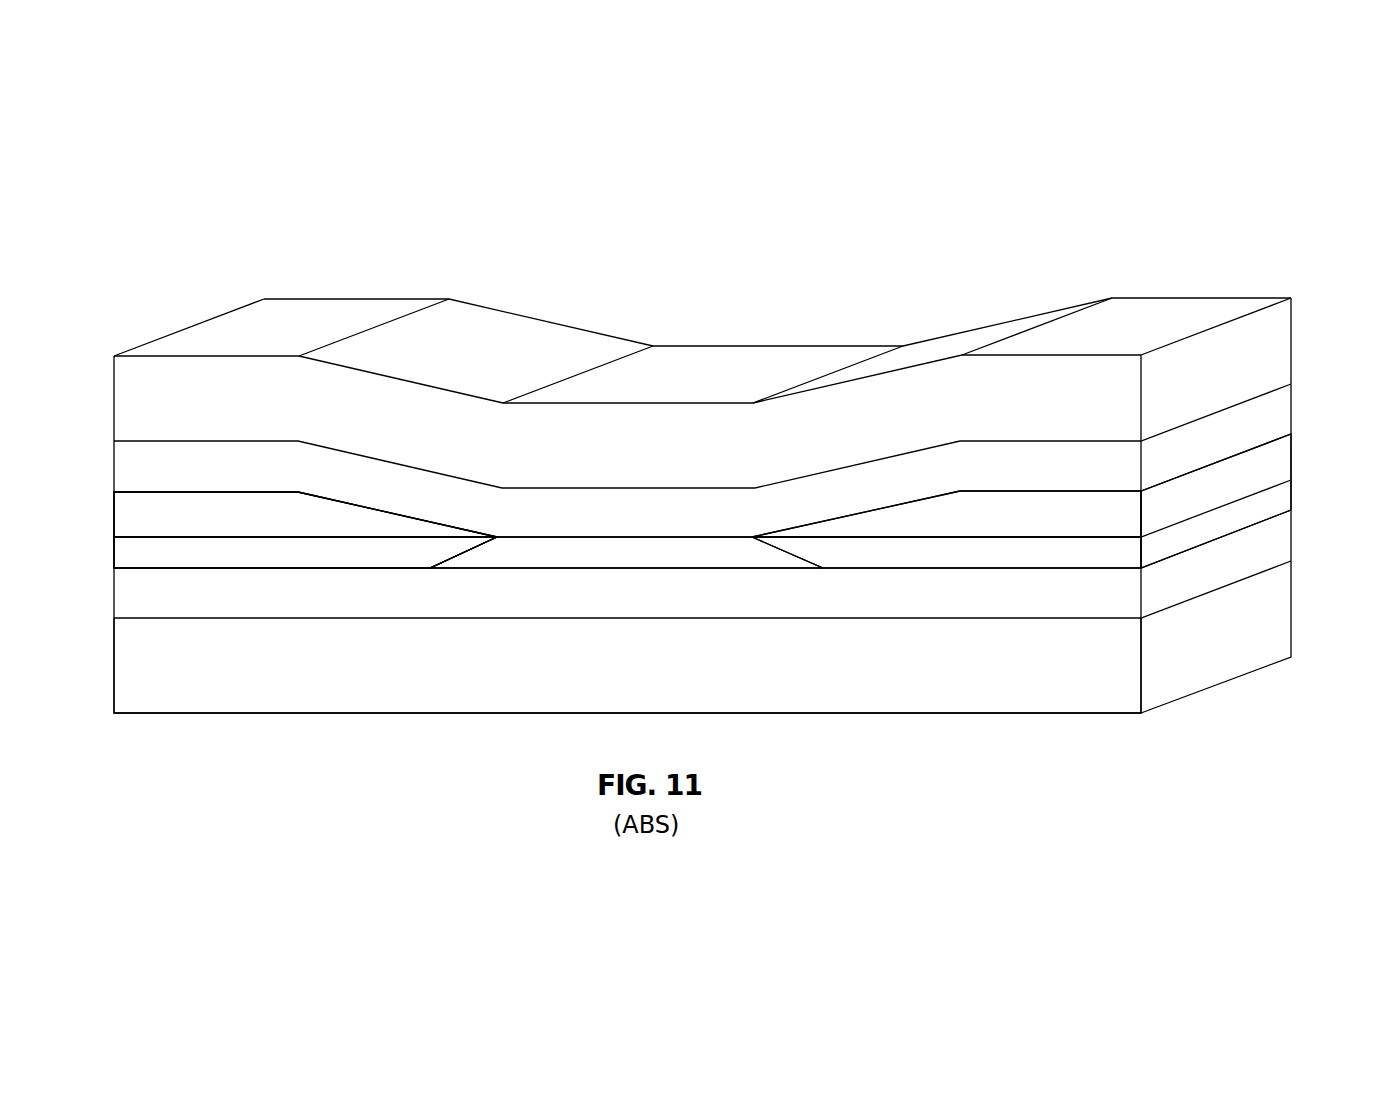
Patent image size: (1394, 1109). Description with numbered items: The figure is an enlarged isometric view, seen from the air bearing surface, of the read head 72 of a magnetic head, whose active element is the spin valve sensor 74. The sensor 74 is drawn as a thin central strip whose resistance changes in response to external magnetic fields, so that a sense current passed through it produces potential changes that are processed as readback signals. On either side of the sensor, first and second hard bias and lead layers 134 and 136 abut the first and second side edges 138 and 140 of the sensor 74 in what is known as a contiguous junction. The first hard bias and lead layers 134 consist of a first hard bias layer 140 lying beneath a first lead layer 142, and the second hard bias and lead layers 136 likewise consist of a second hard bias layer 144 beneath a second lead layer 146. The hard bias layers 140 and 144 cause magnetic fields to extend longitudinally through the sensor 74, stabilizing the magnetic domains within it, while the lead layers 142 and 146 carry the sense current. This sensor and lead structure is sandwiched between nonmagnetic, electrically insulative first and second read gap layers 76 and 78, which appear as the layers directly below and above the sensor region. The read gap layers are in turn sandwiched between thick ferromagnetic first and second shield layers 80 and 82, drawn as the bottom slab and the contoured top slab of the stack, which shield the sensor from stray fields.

The read head 72 is at (798, 300).
The spin valve sensor 74 is at (537, 538).
The first read gap layer 76 is at (410, 612).
The second read gap layer 78 is at (362, 473).
The first shield layer 80 is at (287, 693).
The second shield layer 82 is at (557, 333).
The first hard bias and lead layers 134 is at (113, 492).
The second hard bias and lead layers 136 is at (1298, 435).
The first side edge 138 is at (450, 558).
The first hard bias layer 140 is at (158, 553).
The first lead layer 142 is at (158, 503).
The second hard bias layer 144 is at (1088, 553).
The second lead layer 146 is at (1090, 503).